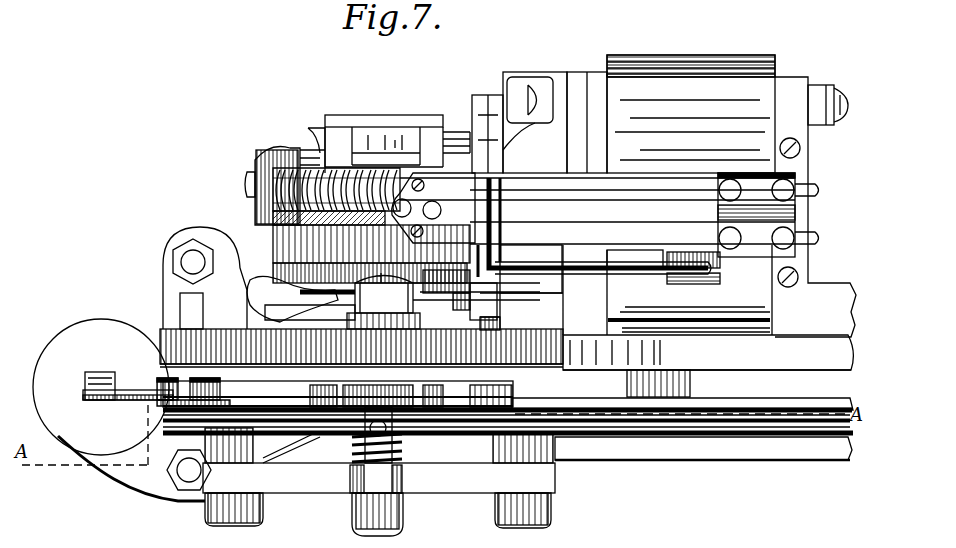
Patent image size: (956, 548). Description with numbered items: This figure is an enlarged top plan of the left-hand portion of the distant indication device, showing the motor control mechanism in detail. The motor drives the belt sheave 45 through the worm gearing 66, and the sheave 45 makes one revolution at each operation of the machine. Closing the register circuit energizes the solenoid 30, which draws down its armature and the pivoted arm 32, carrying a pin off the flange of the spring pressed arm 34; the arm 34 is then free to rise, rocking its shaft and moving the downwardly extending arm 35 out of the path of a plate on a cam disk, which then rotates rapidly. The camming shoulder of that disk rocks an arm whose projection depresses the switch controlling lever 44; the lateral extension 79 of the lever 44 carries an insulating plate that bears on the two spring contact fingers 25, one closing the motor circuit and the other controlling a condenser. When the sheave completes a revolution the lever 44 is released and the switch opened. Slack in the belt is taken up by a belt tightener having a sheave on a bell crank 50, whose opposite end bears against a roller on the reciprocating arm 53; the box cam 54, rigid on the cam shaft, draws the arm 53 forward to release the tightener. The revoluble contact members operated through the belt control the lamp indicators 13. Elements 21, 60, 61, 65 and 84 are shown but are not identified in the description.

The lamp indicators 13 is at (157, 383).
The bolt 21 is at (410, 445).
The spring contact fingers 25 is at (620, 225).
The solenoid 30 is at (82, 338).
The arm 32 is at (127, 398).
The spring pressed arm 34 is at (272, 380).
The downwardly extending arm 35 is at (260, 280).
The switch controlling lever 44 is at (643, 273).
The belt sheave 45 is at (663, 53).
The bell crank 50 is at (768, 403).
The reciprocating arm 53 is at (662, 450).
The box cam 54 is at (690, 382).
The pin 60 is at (480, 205).
The plate 61 is at (410, 220).
The gear 65 is at (290, 228).
The worm gearing 66 is at (302, 152).
The lateral extension 79 is at (498, 212).
The rack 84 is at (513, 399).